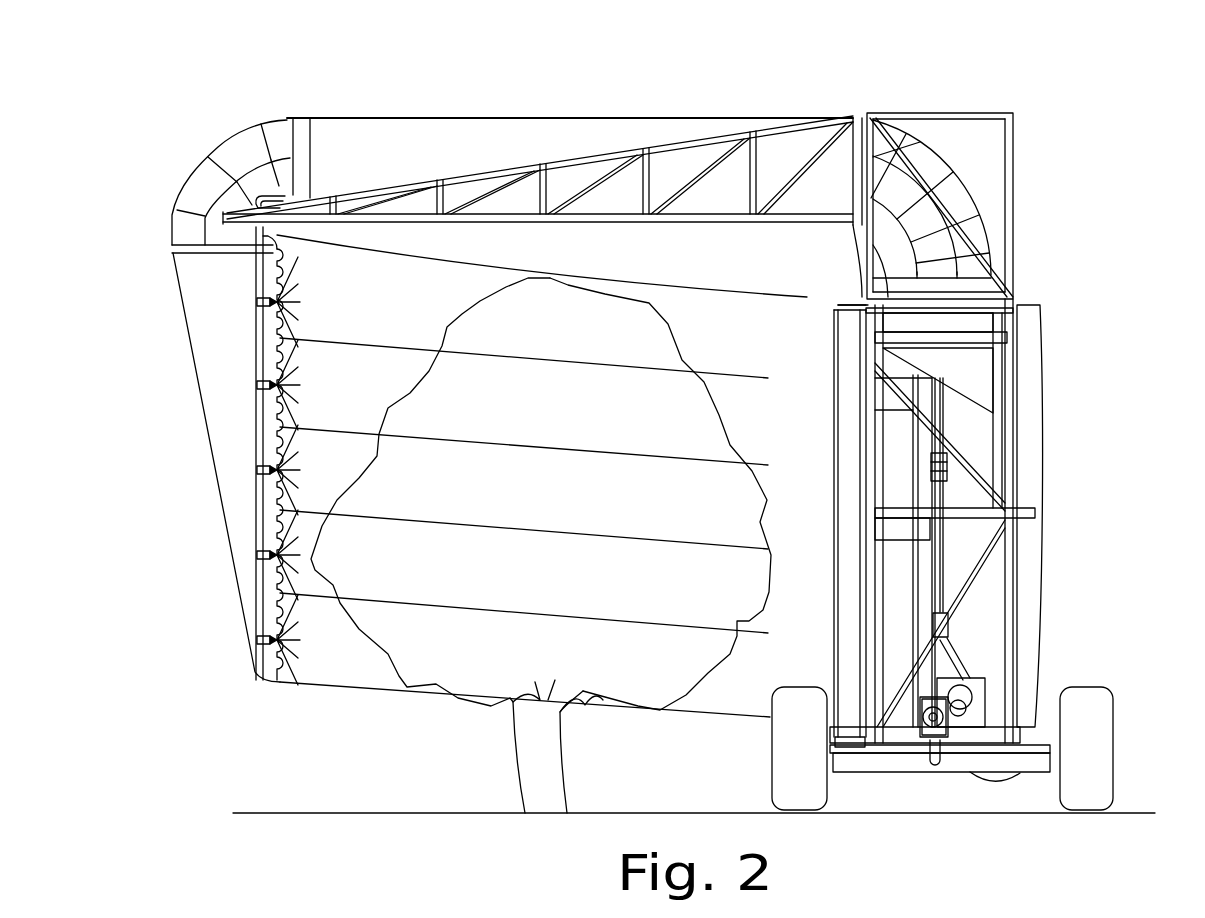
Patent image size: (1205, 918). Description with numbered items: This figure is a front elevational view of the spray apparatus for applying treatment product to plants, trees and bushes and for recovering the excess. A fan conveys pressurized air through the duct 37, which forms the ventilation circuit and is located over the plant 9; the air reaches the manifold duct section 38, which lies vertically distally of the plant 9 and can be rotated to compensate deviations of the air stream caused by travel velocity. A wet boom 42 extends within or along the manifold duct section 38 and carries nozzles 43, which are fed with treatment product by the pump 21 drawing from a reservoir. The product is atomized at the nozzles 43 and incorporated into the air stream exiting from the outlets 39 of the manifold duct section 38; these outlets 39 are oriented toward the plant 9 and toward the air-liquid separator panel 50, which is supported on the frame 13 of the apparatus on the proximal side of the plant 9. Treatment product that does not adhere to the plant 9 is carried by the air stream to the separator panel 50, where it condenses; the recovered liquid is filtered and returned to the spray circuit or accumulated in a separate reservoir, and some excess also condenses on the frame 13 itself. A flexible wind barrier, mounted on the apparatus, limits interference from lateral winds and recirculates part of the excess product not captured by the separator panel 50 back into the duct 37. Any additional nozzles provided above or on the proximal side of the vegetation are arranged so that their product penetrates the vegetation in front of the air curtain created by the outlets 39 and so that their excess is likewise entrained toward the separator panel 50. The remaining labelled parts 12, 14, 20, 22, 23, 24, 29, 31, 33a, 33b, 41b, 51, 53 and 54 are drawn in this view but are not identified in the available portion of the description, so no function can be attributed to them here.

The plant 9 is at (523, 740).
The wheels 12 is at (770, 758).
The frame 13 is at (1030, 382).
The truss 14 is at (657, 230).
The pump 20 is at (933, 727).
The pump 21 is at (943, 733).
The pulley 22 is at (947, 613).
The belt 23 is at (963, 652).
The drive rod 24 is at (947, 417).
The top canopy panel 29 is at (403, 137).
The bracket 31 is at (980, 360).
The air duct elbow 33a is at (933, 147).
The air duct elbow 33b is at (228, 130).
The duct 37 is at (522, 108).
The manifold duct section 38 is at (197, 420).
The outlets 39 is at (318, 330).
The truss diagonal braces 41b is at (798, 197).
The wet boom 42 is at (255, 275).
The nozzles 43 is at (250, 550).
The air-liquid separator panel 50 is at (825, 328).
The base plate 51 is at (858, 755).
The caster 53 is at (997, 777).
The shield panel 54 is at (847, 573).